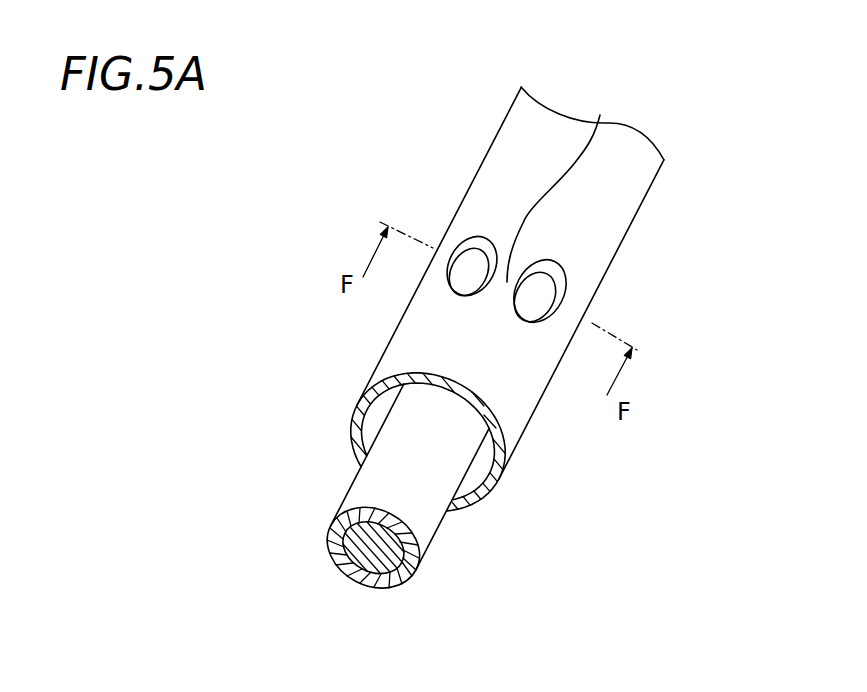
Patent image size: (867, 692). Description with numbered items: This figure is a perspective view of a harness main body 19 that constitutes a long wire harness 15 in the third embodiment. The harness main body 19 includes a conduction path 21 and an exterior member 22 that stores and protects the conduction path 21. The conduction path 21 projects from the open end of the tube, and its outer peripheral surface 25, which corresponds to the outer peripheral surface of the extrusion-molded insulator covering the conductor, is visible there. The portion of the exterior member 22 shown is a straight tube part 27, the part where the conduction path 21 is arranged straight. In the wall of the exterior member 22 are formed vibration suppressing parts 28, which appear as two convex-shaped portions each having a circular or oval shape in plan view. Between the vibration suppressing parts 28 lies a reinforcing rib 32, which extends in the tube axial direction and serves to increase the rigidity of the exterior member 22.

The wire harness 15 is at (330, 200).
The harness main body 19 is at (498, 333).
The conduction path 21 is at (378, 500).
The exterior member 22 is at (626, 196).
The outer peripheral surface of the conduction path 25 is at (423, 517).
The straight tube part 27 is at (588, 258).
The vibration suppressing part 28 is at (472, 272).
The reinforcing rib 32 is at (600, 115).